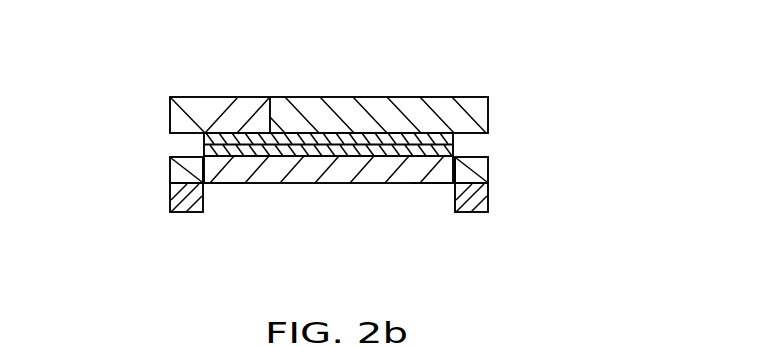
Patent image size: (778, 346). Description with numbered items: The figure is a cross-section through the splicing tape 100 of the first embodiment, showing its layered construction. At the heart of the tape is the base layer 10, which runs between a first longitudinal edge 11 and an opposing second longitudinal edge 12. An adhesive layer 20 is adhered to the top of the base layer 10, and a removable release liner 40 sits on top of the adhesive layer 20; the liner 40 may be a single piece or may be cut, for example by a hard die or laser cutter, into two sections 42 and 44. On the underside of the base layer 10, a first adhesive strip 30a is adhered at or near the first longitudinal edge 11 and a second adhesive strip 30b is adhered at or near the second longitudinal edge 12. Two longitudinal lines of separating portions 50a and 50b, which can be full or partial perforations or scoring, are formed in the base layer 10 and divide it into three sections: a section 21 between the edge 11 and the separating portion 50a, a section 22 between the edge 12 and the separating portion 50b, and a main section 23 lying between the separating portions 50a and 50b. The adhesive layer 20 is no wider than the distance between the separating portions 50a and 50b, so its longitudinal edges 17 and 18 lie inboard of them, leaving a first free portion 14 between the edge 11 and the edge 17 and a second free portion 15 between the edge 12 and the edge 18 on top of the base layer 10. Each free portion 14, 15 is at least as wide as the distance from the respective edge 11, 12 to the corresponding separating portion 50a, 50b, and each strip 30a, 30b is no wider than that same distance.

The splicing tape 100 is at (583, 122).
The base layer 10 is at (103, 177).
The first longitudinal edge 11 is at (172, 178).
The second longitudinal edge 12 is at (490, 178).
The first free portion 14 is at (202, 158).
The second free portion 15 is at (478, 153).
The longitudinal edge of adhesive layer 17 is at (205, 143).
The longitudinal edge of adhesive layer 18 is at (445, 136).
The adhesive layer 20 is at (465, 143).
The section 21 is at (198, 178).
The section 22 is at (457, 178).
The section 23 is at (331, 180).
The first adhesive strip 30a is at (187, 200).
The second adhesive strip 30b is at (472, 205).
The release liner 40 is at (500, 96).
The liner section 42 is at (222, 100).
The liner section 44 is at (394, 104).
The separating portions 50a is at (228, 175).
The separating portions 50b is at (442, 179).